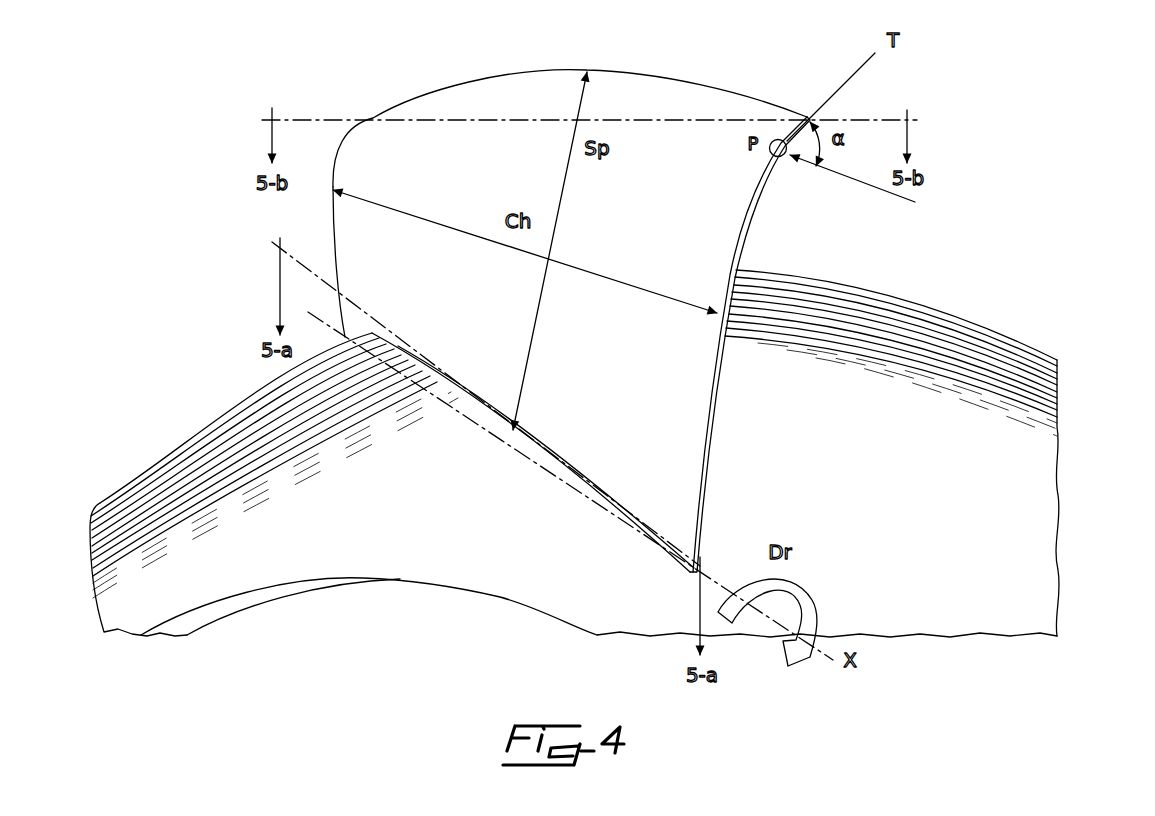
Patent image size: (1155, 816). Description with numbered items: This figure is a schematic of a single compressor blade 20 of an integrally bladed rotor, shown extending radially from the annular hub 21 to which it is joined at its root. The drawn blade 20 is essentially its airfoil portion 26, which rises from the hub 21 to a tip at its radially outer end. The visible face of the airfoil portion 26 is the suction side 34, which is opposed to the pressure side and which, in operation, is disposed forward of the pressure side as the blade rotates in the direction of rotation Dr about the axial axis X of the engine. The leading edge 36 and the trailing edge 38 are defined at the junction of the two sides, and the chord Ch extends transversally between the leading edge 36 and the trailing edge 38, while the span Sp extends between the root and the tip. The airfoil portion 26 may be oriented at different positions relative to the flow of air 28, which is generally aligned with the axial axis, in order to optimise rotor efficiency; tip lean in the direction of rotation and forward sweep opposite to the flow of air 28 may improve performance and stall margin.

The blade 20 is at (420, 147).
The hub 21 is at (250, 415).
The airfoil portion 26 is at (648, 362).
The flow of air 28 is at (845, 180).
The suction side 34 is at (621, 226).
The leading edge 36 is at (700, 460).
The trailing edge 38 is at (336, 266).